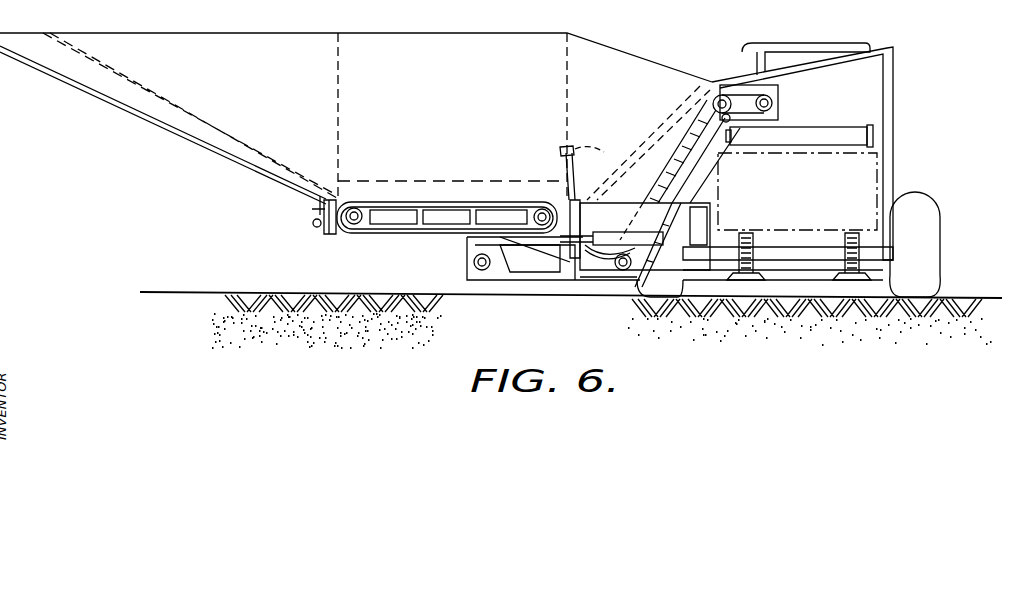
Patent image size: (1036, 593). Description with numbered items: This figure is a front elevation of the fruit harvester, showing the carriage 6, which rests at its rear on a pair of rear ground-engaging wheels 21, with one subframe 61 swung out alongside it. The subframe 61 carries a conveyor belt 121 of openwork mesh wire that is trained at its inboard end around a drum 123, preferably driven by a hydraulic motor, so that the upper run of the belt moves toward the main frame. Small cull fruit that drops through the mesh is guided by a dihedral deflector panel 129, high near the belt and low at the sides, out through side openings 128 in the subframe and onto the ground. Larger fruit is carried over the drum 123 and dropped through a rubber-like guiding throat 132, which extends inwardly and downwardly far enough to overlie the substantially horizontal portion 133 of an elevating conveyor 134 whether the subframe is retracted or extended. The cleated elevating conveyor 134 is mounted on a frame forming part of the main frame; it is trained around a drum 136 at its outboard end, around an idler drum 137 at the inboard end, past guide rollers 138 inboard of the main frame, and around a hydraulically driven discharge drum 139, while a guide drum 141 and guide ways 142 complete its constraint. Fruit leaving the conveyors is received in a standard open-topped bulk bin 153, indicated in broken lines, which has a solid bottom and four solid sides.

The carriage 6 is at (893, 186).
The rear ground-engaging wheels 21 is at (942, 267).
The subframe 61 is at (324, 210).
The conveyor belt 121 is at (405, 202).
The inboard drum 123 is at (568, 200).
The side openings 128 is at (388, 218).
The dihedral deflector panel 129 is at (442, 215).
The guiding throat 132 is at (365, 247).
The substantially horizontal portion 133 is at (497, 258).
The elevating conveyor 134 is at (535, 250).
The drum 136 is at (475, 277).
The idler drum 137 is at (633, 265).
The guide rollers 138 is at (728, 140).
The discharge drum 139 is at (774, 104).
The guide drum 141 is at (722, 95).
The guide ways 142 is at (636, 226).
The bulk bin 153 is at (878, 172).